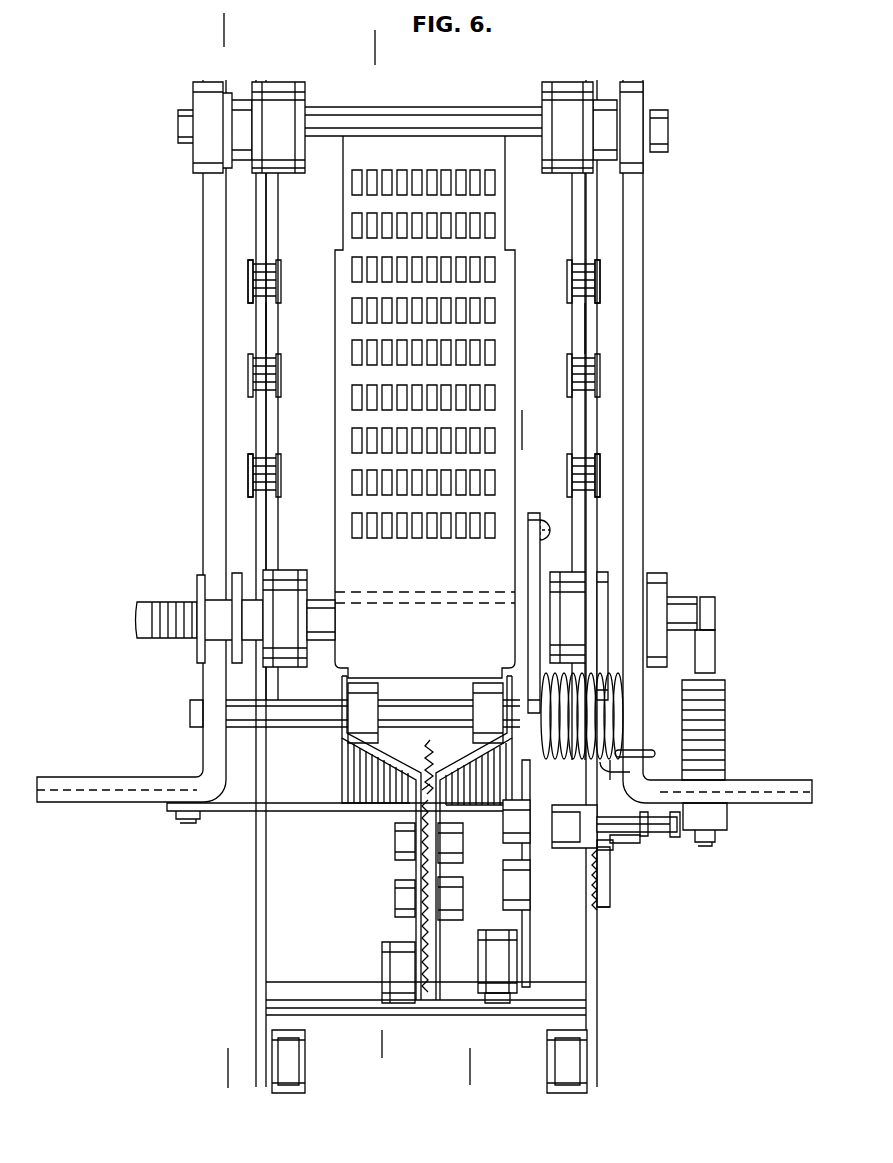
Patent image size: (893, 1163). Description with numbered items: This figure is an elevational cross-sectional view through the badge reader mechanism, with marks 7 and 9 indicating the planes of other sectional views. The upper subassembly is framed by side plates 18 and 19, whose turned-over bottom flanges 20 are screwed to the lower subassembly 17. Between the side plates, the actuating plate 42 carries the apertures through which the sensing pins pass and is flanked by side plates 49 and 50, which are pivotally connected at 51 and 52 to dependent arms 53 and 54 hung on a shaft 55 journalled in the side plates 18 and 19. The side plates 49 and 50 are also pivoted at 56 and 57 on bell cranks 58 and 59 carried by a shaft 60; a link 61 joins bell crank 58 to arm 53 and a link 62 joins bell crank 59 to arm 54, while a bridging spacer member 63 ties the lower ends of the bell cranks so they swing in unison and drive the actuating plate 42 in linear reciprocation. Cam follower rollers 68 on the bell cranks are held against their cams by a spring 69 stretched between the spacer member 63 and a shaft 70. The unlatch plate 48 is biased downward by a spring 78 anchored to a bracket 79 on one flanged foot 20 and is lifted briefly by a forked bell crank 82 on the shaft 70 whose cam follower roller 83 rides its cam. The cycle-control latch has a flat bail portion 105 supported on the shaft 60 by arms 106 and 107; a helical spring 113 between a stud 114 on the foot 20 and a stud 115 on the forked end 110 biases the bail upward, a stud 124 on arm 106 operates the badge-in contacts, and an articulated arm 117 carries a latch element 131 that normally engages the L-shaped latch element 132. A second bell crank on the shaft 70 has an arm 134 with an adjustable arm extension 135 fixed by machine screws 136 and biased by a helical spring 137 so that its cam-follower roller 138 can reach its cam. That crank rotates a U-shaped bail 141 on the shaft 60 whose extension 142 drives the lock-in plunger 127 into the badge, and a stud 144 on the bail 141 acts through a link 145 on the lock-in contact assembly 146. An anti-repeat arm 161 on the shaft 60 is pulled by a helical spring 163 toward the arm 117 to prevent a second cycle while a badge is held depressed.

The section line 7- 7 is at (222, 28).
The subassembly 17 is at (372, 45).
The section line 9- 9 is at (490, 420).
The side plate 18 is at (205, 333).
The side plate 19 is at (636, 365).
The bottom flange 20 is at (73, 795).
The actuating plate 42 is at (430, 375).
The unlatch plate 48 is at (445, 148).
The side plate 49 is at (270, 226).
The side plate 50 is at (574, 230).
The pivotal connection 51 is at (250, 270).
The pivotal connection 52 is at (600, 272).
The dependent arm 53 is at (255, 210).
The dependent arm 54 is at (590, 222).
The shaft 55 is at (396, 108).
The pivot 56 is at (250, 470).
The pivot 57 is at (600, 480).
The bell crank 58 is at (258, 866).
The bell crank 59 is at (598, 932).
The shaft 60 is at (318, 640).
The link 61 is at (273, 345).
The link 62 is at (580, 345).
The bridging spacer member 63 is at (330, 995).
The cam follower roller 68 is at (290, 1088).
The spring 69 is at (412, 762).
The shaft 70 is at (400, 705).
The spring 78 is at (440, 750).
The bracket 79 is at (214, 812).
The forked bell crank 82 is at (415, 872).
The cam follower roller 83 is at (398, 955).
The bail portion 105 is at (302, 568).
The arm 106 is at (232, 548).
The arm 107 is at (608, 562).
The forked end portion 110 is at (640, 834).
The helical spring 113 is at (660, 836).
The stud 114 is at (682, 828).
The stud 115 is at (665, 845).
The articulated arm 117 is at (612, 848).
The stud 124 is at (160, 600).
The lock-in plunger 127 is at (541, 518).
The latch element 131 is at (570, 848).
The latch element 132 is at (628, 766).
The arm 134 is at (543, 870).
The arm extension 135 is at (515, 945).
The machine screws 136 is at (503, 830).
The helical spring 137 is at (540, 672).
The cam-follower roller 138 is at (500, 1003).
The U-shaped bail 141 is at (648, 752).
The extension 142 is at (542, 540).
The stud 144 is at (695, 600).
The link 145 is at (716, 662).
The electrical contact assembly 146 is at (726, 715).
The arm 161 is at (615, 908).
The helical spring 163 is at (612, 890).